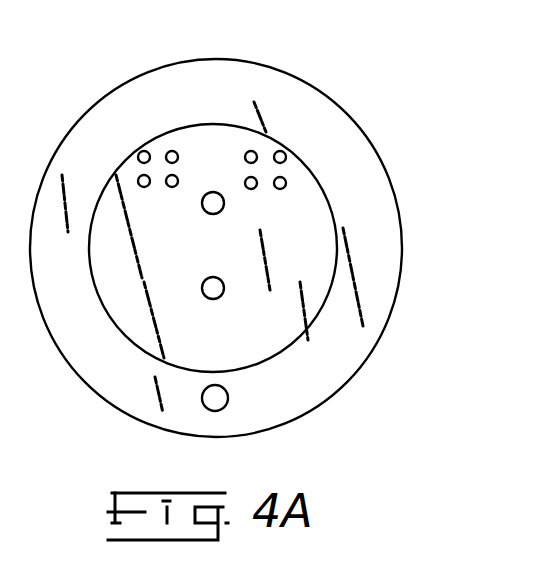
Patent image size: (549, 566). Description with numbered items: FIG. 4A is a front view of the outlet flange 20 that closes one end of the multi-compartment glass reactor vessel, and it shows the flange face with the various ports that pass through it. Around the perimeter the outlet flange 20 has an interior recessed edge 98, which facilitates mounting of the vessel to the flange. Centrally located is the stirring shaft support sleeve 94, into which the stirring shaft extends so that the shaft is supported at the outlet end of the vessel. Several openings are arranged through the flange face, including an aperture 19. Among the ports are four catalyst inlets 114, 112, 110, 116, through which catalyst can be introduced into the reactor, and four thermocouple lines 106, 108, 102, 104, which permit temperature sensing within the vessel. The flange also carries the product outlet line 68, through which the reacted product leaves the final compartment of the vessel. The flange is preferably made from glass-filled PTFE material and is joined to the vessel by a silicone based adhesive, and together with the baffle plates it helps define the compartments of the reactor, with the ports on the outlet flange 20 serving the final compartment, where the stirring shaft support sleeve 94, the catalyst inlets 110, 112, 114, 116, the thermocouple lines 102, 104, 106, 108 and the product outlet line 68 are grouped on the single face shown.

The outlet flange 20 is at (337, 102).
The interior recessed edge 98 is at (320, 313).
The product outlet line 68 is at (213, 192).
The stirring shaft support sleeve 94 is at (213, 299).
The aperture 19 is at (228, 398).
The catalyst inlet 114 is at (140, 153).
The catalyst inlet 112 is at (170, 151).
The catalyst inlet 110 is at (178, 181).
The catalyst inlet 116 is at (144, 187).
The thermocouple line 106 is at (256, 152).
The thermocouple line 108 is at (286, 157).
The thermocouple line 102 is at (286, 183).
The thermocouple line 104 is at (257, 187).